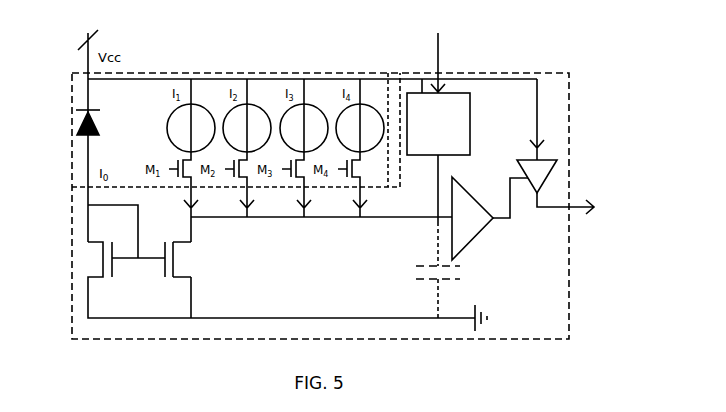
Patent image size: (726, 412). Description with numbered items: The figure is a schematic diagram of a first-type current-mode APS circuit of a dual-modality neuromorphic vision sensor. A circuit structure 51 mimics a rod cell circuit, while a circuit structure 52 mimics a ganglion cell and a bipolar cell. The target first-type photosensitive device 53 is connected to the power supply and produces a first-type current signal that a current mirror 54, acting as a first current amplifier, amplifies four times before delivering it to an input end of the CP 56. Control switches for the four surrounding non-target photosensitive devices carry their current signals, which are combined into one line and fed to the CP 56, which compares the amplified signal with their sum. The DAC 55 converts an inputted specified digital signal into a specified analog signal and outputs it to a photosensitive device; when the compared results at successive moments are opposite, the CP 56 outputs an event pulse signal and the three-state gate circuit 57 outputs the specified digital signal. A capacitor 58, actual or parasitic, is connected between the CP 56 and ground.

The circuit structure 51 is at (218, 72).
The circuit structure 52 is at (503, 72).
The target first-type photosensitive device 53 is at (70, 128).
The current mirror 54 is at (93, 258).
The DAC 55 is at (470, 127).
The CP 56 is at (470, 195).
The three-state gate circuit 57 is at (548, 173).
The capacitor 58 is at (413, 275).